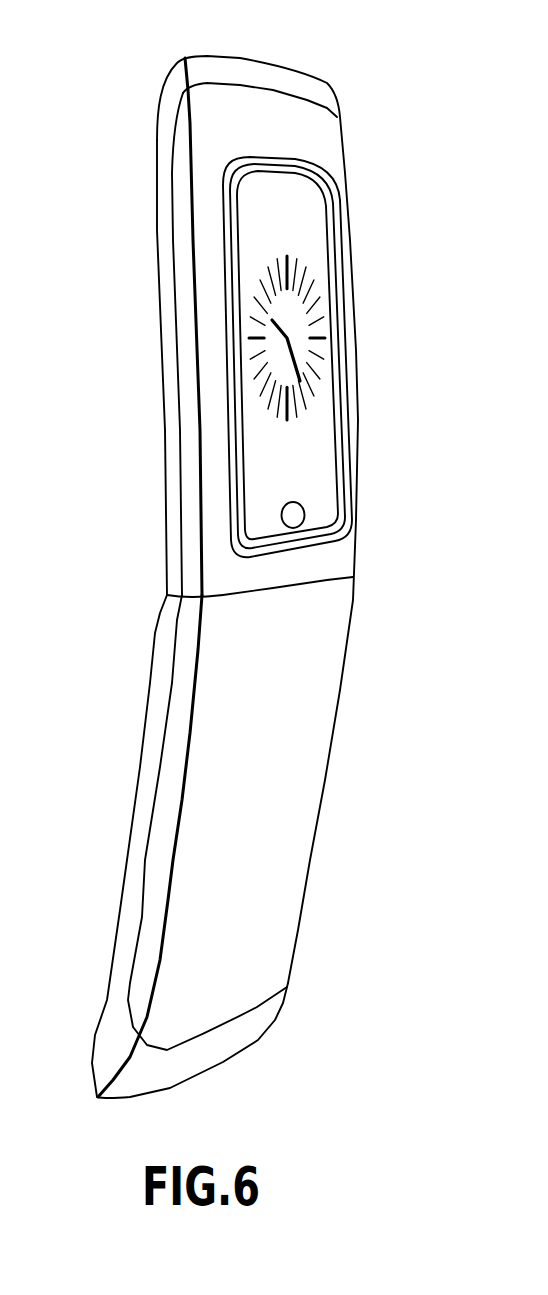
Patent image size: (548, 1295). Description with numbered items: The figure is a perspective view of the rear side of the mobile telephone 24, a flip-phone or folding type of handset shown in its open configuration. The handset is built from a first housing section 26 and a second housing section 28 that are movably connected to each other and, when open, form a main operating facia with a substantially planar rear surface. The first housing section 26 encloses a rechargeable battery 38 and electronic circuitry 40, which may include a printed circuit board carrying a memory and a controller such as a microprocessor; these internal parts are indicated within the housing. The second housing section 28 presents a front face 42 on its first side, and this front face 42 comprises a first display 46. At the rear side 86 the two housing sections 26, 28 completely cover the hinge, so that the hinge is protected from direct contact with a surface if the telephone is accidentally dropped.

The mobile telephone 24 is at (121, 72).
The first housing section 26 is at (120, 907).
The second housing section 28 is at (160, 345).
The rechargeable battery 38 is at (238, 948).
The electronic circuitry 40 is at (270, 820).
The front face 42 is at (333, 250).
The first display 46 is at (311, 366).
The rear side 86 is at (340, 587).